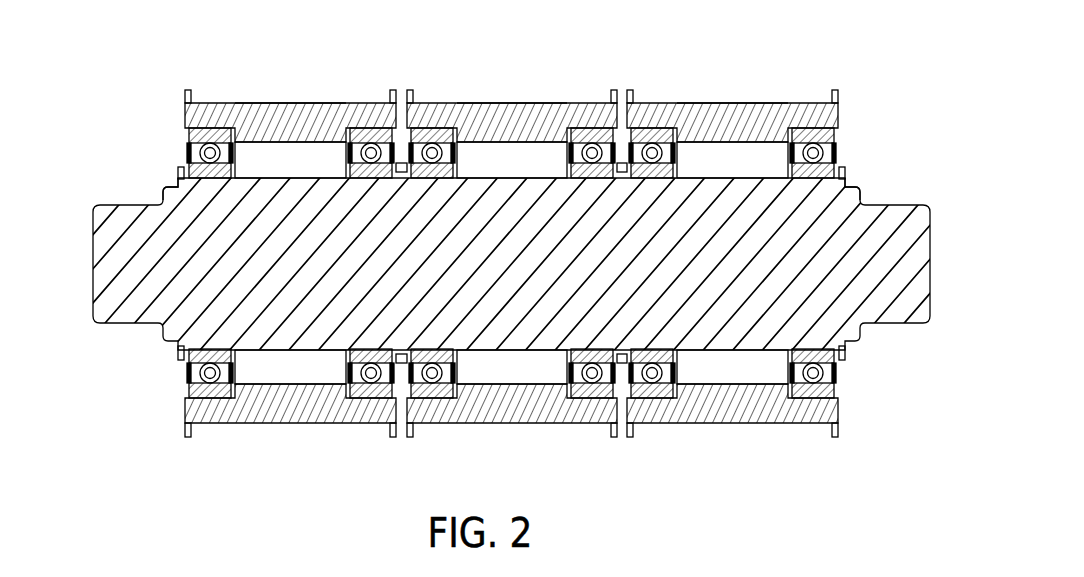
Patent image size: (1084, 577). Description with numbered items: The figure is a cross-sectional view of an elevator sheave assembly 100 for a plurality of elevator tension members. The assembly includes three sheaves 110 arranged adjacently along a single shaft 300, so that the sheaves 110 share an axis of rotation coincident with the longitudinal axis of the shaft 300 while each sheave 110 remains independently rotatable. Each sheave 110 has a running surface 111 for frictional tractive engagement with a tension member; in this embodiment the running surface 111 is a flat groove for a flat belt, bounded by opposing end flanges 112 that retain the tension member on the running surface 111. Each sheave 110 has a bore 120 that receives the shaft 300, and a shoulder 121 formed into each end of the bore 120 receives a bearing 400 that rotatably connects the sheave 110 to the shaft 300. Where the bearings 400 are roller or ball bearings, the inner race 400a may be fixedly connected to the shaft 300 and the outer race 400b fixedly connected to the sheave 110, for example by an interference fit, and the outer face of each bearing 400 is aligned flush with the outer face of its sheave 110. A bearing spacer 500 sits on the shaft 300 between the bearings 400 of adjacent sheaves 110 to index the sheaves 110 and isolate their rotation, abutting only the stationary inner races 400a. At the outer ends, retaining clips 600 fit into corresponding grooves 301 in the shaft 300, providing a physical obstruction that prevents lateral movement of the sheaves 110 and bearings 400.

The elevator sheave assembly 100 is at (448, 259).
The sheave 110 is at (188, 432).
The running surface 111 is at (276, 103).
The end flange 112 is at (188, 90).
The bore 120 is at (283, 170).
The shoulder 121 is at (338, 370).
The shaft 300 is at (93, 262).
The groove 301 is at (180, 206).
The bearing 400 is at (508, 255).
The inner race 400a is at (182, 352).
The outer race 400b is at (493, 275).
The bearing spacer 500 is at (399, 178).
The retaining clip 600 is at (178, 172).